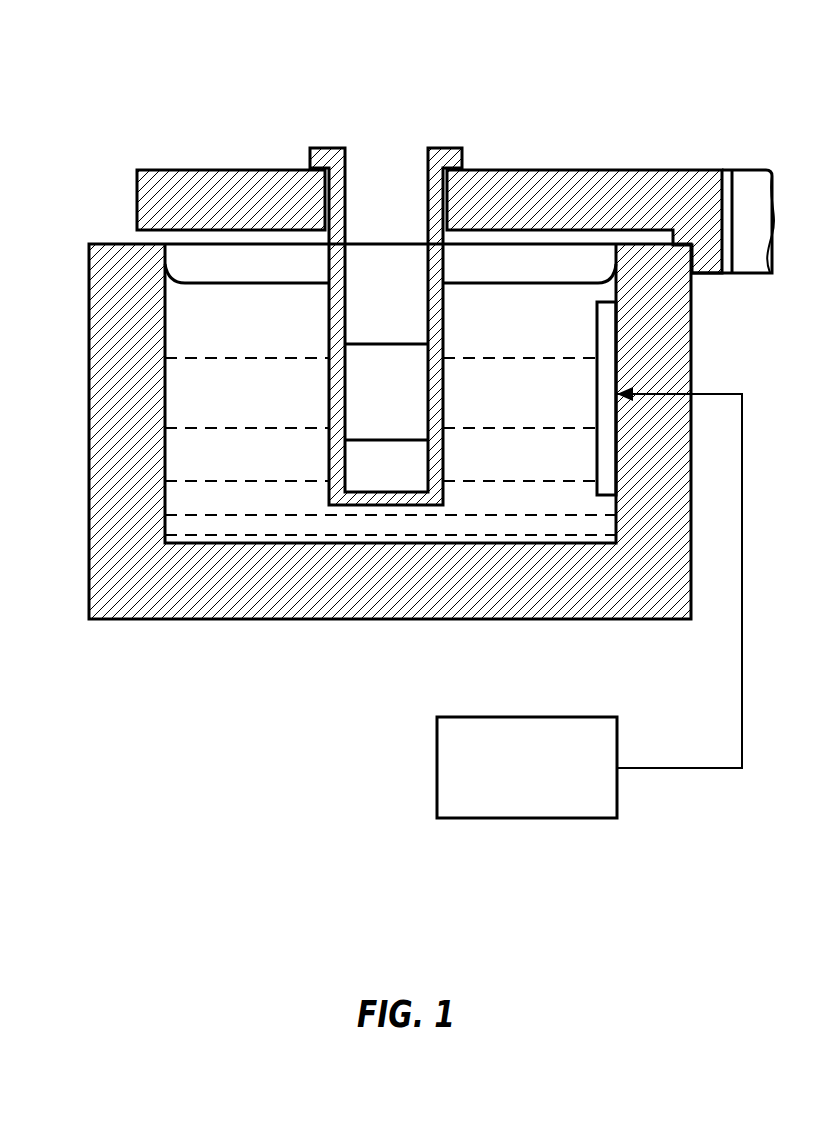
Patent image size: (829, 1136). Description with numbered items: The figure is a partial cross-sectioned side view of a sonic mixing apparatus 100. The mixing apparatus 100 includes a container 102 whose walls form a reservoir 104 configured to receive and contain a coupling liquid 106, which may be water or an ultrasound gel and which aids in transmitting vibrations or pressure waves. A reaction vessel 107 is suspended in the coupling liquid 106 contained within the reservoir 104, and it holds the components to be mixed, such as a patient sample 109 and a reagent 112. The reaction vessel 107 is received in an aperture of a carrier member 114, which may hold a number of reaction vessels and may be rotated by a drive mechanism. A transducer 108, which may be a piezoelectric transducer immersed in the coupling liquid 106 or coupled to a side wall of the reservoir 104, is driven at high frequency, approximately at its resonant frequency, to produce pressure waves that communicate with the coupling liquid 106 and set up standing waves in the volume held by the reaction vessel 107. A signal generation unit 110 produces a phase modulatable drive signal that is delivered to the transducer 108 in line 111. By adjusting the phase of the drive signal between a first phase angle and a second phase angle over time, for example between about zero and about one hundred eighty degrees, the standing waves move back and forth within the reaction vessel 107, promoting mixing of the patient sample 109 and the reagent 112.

The sonic mixing apparatus 100 is at (664, 82).
The container 102 is at (162, 630).
The reservoir 104 is at (167, 457).
The coupling liquid 106 is at (270, 331).
The reaction vessel 107 is at (442, 152).
The transducer 108 is at (608, 337).
The patient sample 109 is at (398, 468).
The signal generation unit 110 is at (526, 828).
The line 111 is at (742, 590).
The reagent 112 is at (365, 397).
The carrier member 114 is at (551, 170).